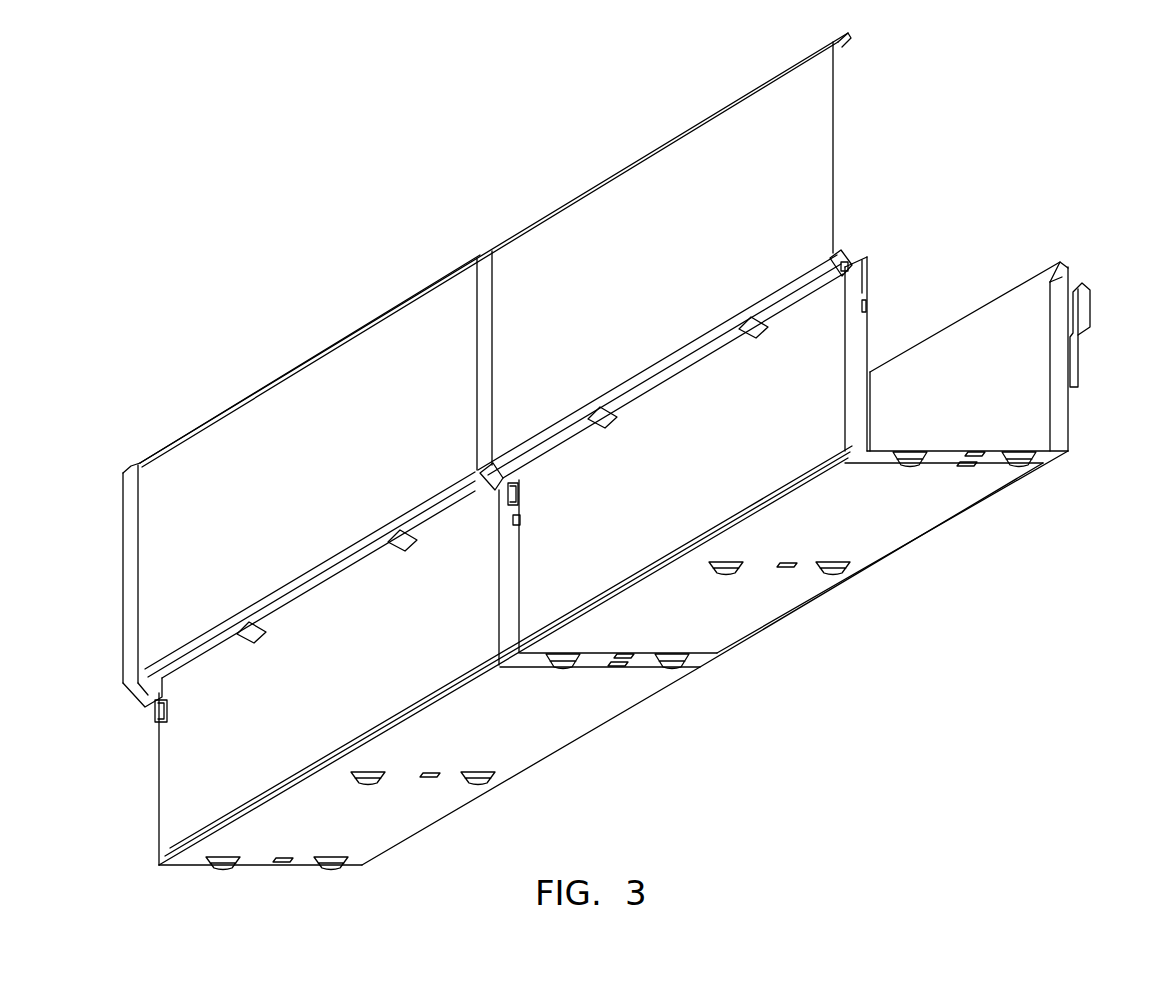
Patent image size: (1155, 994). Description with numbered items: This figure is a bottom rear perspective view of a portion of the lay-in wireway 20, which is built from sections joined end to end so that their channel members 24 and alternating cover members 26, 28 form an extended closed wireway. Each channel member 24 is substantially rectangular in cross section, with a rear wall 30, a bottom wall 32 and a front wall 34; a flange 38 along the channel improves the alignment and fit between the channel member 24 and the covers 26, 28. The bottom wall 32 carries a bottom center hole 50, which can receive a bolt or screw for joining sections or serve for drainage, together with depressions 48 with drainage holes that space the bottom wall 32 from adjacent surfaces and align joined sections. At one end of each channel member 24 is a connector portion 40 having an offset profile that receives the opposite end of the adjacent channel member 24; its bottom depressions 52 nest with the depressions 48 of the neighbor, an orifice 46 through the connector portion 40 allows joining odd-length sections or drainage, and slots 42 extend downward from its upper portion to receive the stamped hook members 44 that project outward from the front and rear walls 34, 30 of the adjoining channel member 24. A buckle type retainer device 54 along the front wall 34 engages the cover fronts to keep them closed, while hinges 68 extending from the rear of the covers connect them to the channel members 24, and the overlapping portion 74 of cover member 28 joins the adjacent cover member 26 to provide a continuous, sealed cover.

The lay-in wireway 20 is at (402, 212).
The channel member 24 is at (549, 757).
The cover member 26 is at (640, 172).
The cover member 28 is at (316, 366).
The rear wall 30 is at (324, 687).
The bottom wall 32 is at (479, 726).
The front wall 34 is at (932, 392).
The flange 38 is at (1058, 258).
The connector portion 40 is at (847, 375).
The slots 42 is at (868, 266).
The hook members 44 is at (519, 494).
The orifice 46 is at (519, 521).
The depressions 48 is at (333, 868).
The bottom center hole 50 is at (284, 857).
The bottom depressions 52 is at (577, 655).
The buckle type retainer device 54 is at (1090, 300).
The hinge 68 is at (392, 538).
The overlapping portion 74 is at (124, 471).